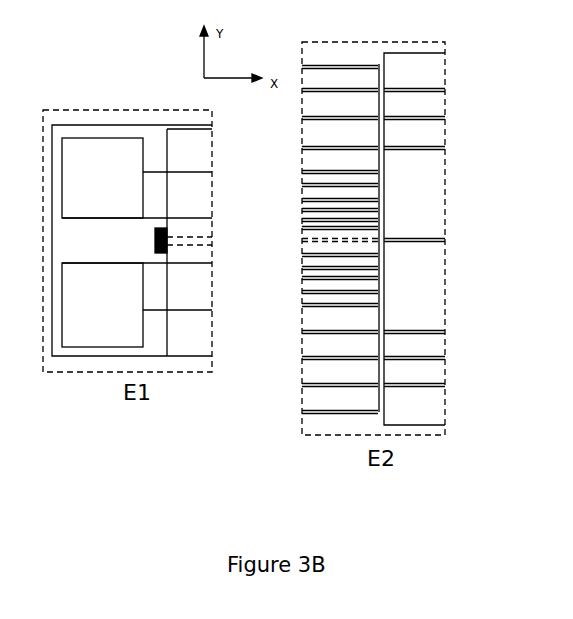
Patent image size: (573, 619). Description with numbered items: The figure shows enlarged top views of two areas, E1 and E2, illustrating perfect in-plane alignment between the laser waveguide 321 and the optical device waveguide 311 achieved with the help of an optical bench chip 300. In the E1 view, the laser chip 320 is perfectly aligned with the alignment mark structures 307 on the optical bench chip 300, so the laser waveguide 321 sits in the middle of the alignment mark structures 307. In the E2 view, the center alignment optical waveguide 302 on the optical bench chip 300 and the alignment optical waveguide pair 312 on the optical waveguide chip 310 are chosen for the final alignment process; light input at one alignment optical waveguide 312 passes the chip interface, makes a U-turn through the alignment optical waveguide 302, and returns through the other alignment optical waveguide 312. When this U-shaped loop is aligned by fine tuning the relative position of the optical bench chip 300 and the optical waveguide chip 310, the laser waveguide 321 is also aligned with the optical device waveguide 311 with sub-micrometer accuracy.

The optical bench chip 300 is at (92, 132).
The laser chip 320 is at (193, 142).
The alignment mark structures 307 is at (163, 227).
The laser waveguide 321 is at (315, 240).
The alignment optical waveguide 302 is at (294, 90).
The optical waveguide chip 310 is at (442, 62).
The optical device waveguide 311 is at (420, 240).
The alignment optical waveguide pair 312 is at (449, 90).